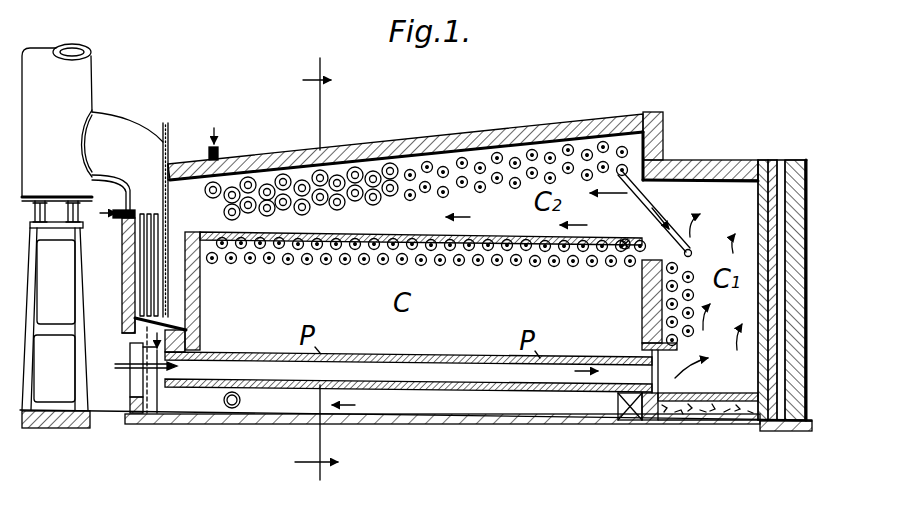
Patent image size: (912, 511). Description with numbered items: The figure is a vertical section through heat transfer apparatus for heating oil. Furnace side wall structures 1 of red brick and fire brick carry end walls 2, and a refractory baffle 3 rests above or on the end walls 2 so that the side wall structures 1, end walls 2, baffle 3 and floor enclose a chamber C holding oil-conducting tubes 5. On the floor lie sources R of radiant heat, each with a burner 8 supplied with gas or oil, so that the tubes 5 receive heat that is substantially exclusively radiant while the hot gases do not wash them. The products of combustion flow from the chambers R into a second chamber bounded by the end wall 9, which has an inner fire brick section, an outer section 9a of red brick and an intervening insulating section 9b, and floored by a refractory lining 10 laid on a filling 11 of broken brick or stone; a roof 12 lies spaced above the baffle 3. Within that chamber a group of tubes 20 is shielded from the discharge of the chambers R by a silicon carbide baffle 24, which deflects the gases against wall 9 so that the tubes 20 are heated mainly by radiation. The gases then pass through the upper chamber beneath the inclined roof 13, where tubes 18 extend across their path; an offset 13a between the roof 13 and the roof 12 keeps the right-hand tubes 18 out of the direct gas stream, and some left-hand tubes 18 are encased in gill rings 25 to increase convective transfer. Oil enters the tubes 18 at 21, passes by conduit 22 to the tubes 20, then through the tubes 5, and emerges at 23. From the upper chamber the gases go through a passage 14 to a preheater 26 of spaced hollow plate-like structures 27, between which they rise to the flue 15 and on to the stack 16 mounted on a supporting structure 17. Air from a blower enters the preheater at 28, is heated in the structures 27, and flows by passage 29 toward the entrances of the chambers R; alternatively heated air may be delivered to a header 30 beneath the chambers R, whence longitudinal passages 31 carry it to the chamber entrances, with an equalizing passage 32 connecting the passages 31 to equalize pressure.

The furnace side wall structure 1 is at (718, 183).
The end wall 2 is at (644, 310).
The baffle 3 is at (235, 236).
The tube 5 is at (308, 264).
The burner 8 is at (158, 400).
The end wall of chamber C1 9 is at (763, 218).
The outer section 9a is at (790, 421).
The intervening section 9b is at (782, 228).
The refractory lining 10 is at (712, 400).
The filling 11 is at (665, 421).
The roof of chamber C1 12 is at (690, 170).
The inclined roof 13 is at (450, 138).
The offset 13a is at (663, 120).
The passage 14 is at (180, 268).
The flue 15 is at (145, 143).
The stack 16 is at (78, 90).
The supporting structure 17 is at (80, 380).
The tube 18 is at (253, 179).
The tube 20 is at (667, 303).
The oil entrance 21 is at (207, 148).
The conduit 22 is at (650, 207).
The oil outlet 23 is at (625, 239).
The baffle 24 is at (656, 350).
The gill ring 25 is at (248, 177).
The preheater 26 is at (136, 319).
The plate-like structure 27 is at (158, 252).
The preheater air inlet 28 is at (125, 220).
The passage 29 is at (193, 338).
The header 30 is at (625, 421).
The passage 31 is at (303, 412).
The equalizing passage 32 is at (232, 409).